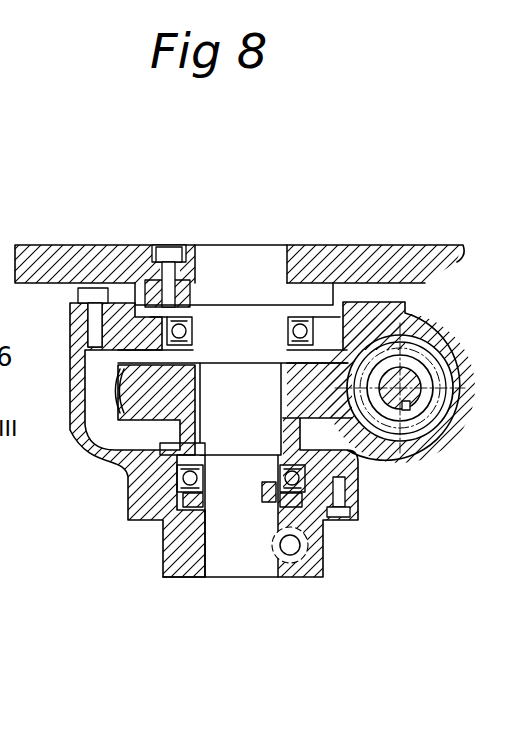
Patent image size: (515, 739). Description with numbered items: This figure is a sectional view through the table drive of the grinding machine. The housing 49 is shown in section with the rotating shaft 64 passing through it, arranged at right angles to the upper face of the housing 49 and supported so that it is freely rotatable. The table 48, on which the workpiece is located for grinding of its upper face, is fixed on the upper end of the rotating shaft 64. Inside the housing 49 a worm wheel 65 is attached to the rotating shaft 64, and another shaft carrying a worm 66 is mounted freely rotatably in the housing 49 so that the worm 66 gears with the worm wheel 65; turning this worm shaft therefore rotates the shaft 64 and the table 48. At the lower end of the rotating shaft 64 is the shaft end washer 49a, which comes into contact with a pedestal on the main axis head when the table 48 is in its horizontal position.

The table 48 is at (321, 244).
The housing 49 is at (82, 445).
The shaft end washer 49a is at (300, 578).
The rotating shaft 64 is at (232, 508).
The worm wheel 65 is at (118, 392).
The worm 66 is at (455, 346).